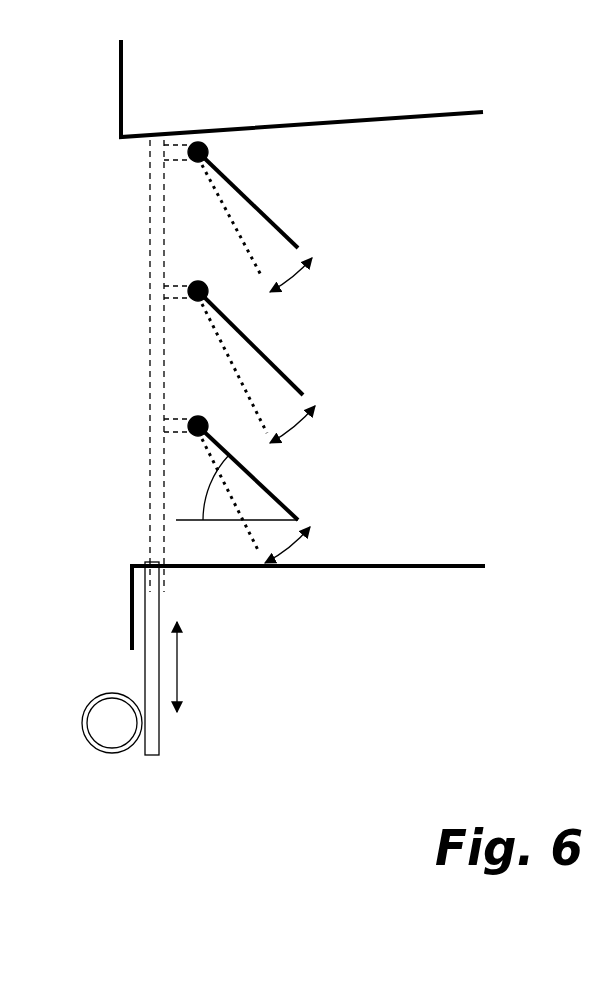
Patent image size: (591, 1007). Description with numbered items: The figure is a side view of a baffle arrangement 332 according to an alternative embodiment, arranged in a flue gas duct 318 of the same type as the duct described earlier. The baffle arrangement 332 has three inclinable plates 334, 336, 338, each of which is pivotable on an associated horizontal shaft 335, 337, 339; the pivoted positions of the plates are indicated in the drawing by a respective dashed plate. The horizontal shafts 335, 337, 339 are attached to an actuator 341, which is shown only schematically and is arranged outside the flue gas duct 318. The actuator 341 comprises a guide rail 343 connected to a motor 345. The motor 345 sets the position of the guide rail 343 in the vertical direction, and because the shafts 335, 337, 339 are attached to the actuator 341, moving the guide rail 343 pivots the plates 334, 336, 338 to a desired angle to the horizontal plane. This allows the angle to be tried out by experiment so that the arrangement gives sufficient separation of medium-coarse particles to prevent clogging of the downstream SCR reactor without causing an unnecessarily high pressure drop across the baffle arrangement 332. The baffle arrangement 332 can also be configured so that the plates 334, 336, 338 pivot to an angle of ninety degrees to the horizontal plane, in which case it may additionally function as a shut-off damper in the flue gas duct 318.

The flue gas duct 318 is at (330, 120).
The baffle arrangement 332 is at (334, 340).
The inclinable plate 334 is at (268, 214).
The horizontal shaft 335 is at (208, 153).
The inclinable plate 336 is at (292, 378).
The horizontal shaft 337 is at (198, 280).
The inclinable plate 338 is at (278, 497).
The horizontal shaft 339 is at (198, 416).
The actuator 341 is at (163, 591).
The guide rail 343 is at (147, 463).
The motor 345 is at (107, 755).